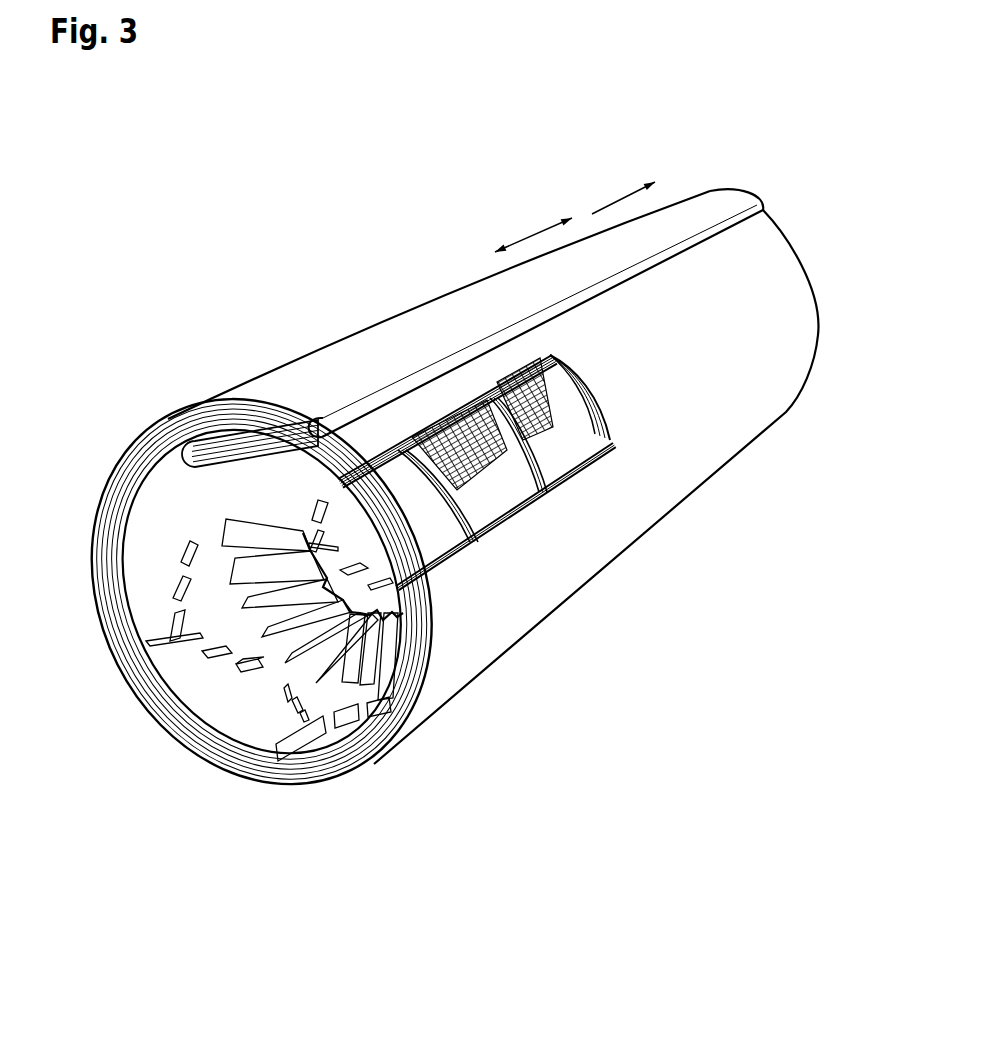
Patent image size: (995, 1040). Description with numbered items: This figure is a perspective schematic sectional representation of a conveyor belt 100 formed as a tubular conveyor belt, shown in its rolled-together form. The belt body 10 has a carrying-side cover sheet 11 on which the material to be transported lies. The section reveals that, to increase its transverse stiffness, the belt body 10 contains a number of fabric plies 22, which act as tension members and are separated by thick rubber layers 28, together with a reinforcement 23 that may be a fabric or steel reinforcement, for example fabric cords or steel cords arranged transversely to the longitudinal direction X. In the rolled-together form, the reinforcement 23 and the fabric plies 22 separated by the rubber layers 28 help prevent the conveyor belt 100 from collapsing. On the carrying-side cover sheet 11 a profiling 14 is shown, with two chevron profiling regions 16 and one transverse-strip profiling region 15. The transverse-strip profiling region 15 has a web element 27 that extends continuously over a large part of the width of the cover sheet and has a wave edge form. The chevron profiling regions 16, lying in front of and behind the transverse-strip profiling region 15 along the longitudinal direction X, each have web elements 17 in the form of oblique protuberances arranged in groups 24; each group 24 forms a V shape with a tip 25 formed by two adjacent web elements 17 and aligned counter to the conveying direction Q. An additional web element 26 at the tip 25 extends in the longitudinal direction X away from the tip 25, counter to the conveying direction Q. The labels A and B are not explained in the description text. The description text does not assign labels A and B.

The conveyor belt 100 is at (156, 306).
The belt body 10 is at (683, 427).
The carrying-side cover sheet 11 is at (141, 505).
The profiling 14 is at (378, 697).
The transverse-strip profiling region 15 is at (181, 518).
The chevron profiling regions 16 is at (298, 492).
The web elements 17 is at (243, 668).
The fabric plies 22 is at (518, 405).
The reinforcement 23 is at (618, 428).
The groups 24 is at (66, 577).
The tip 25 is at (178, 641).
The additional web element 26 is at (172, 617).
The web element 27 is at (357, 650).
The rubber layers 28 is at (487, 502).
The longitudinal strip A is at (397, 336).
The tab of strip B is at (223, 432).
The longitudinal direction X is at (527, 233).
The conveying direction Q is at (612, 202).